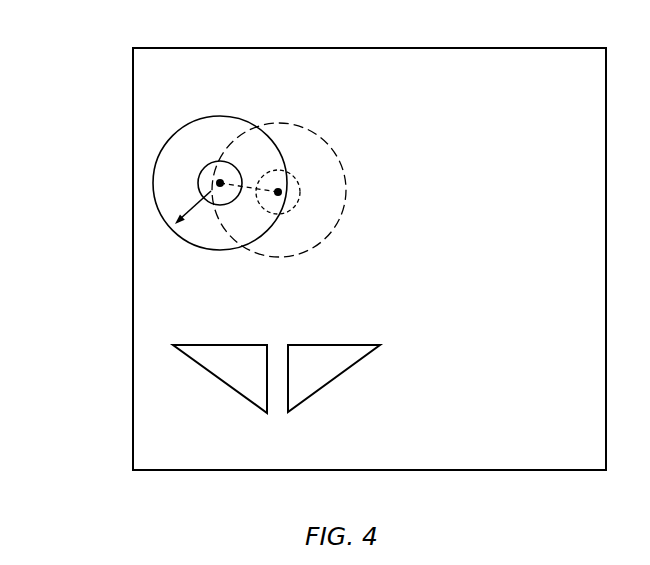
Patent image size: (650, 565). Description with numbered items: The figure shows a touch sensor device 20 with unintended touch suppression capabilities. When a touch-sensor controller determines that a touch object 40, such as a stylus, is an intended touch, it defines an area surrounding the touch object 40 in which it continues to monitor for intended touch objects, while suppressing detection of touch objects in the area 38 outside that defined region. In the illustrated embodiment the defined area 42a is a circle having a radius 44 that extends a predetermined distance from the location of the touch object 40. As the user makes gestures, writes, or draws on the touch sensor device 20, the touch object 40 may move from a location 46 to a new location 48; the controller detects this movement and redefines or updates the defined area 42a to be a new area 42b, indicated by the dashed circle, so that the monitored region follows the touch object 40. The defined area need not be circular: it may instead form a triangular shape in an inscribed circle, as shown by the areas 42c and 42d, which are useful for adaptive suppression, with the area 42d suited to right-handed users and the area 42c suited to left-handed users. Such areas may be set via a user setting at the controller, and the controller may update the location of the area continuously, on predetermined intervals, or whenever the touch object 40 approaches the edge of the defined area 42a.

The touch sensor device 20 is at (82, 55).
The area 38 is at (560, 102).
The touch object 40 is at (207, 163).
The defined area 42a is at (252, 223).
The new area 42b is at (320, 200).
The area 42c is at (242, 363).
The area 42d is at (332, 362).
The radius 44 is at (185, 215).
The location 46 is at (219, 183).
The new location 48 is at (278, 191).